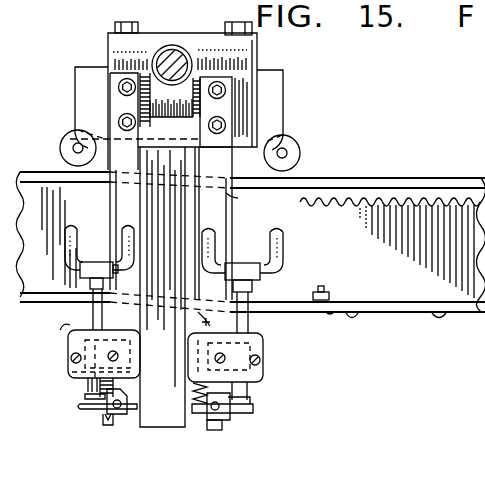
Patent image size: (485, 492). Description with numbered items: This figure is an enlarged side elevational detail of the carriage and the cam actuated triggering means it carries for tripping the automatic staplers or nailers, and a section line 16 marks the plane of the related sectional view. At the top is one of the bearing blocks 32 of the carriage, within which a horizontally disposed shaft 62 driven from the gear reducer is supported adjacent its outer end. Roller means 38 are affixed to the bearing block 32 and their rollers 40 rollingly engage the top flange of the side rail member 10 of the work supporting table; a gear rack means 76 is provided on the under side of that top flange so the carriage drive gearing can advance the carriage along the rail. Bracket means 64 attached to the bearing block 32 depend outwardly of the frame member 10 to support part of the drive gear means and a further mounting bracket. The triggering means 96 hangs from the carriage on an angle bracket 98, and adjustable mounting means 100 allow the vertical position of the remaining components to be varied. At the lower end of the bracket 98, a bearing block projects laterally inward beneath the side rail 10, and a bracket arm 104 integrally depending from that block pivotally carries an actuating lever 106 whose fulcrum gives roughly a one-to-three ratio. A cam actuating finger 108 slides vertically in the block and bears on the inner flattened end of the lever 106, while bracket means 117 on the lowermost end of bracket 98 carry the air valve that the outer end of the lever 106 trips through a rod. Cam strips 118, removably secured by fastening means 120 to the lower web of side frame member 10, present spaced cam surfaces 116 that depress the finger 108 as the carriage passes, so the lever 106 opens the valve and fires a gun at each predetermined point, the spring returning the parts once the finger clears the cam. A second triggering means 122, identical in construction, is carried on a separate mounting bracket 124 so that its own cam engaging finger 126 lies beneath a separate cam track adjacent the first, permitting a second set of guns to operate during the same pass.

The section line 16- 16 is at (37, 58).
The side rail member 10 is at (477, 230).
The gear rack means 76 is at (335, 204).
The mounting bracket 124 is at (228, 196).
The fastening means 120 is at (329, 294).
The cam surface 116 is at (440, 320).
The cam strip 118 is at (332, 316).
The bearing block 32 is at (264, 61).
The horizontally disposed shaft 62 is at (172, 45).
The roller means 38 is at (278, 102).
The roller 40 is at (61, 147).
The adjustable mounting means 100 is at (118, 122).
The angle bracket 98 is at (196, 160).
The bracket means 64 is at (162, 418).
The cam actuating finger 108 is at (122, 318).
The triggering means 96 is at (58, 332).
The second triggering means 122 is at (270, 386).
The bracket means 117 is at (70, 371).
The cam engaging finger 126 is at (204, 313).
The actuating lever 106 is at (80, 410).
The bracket arm 104 is at (115, 426).